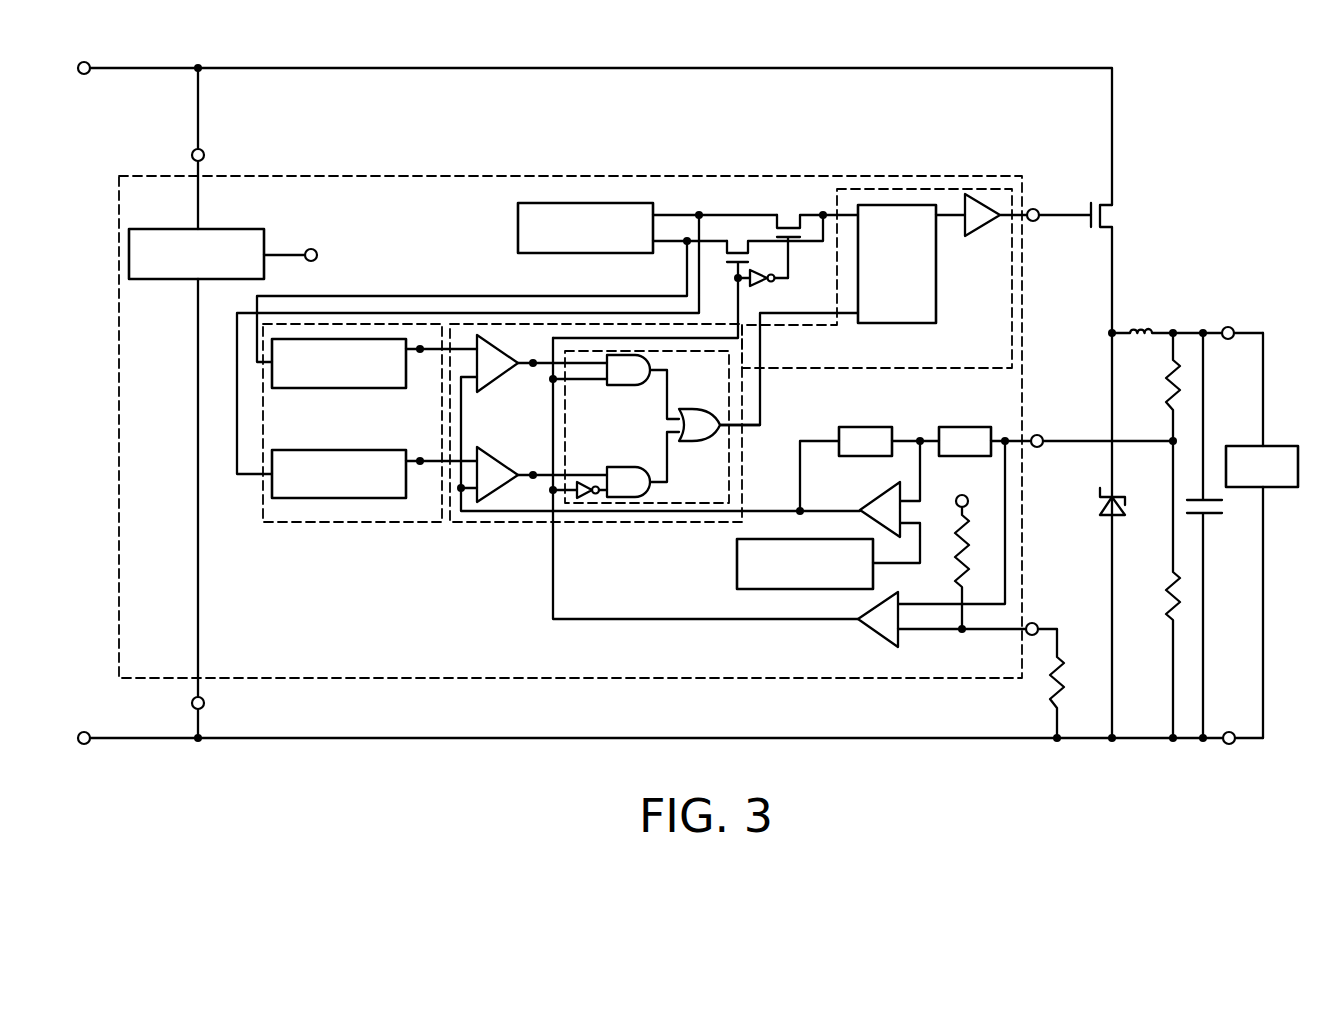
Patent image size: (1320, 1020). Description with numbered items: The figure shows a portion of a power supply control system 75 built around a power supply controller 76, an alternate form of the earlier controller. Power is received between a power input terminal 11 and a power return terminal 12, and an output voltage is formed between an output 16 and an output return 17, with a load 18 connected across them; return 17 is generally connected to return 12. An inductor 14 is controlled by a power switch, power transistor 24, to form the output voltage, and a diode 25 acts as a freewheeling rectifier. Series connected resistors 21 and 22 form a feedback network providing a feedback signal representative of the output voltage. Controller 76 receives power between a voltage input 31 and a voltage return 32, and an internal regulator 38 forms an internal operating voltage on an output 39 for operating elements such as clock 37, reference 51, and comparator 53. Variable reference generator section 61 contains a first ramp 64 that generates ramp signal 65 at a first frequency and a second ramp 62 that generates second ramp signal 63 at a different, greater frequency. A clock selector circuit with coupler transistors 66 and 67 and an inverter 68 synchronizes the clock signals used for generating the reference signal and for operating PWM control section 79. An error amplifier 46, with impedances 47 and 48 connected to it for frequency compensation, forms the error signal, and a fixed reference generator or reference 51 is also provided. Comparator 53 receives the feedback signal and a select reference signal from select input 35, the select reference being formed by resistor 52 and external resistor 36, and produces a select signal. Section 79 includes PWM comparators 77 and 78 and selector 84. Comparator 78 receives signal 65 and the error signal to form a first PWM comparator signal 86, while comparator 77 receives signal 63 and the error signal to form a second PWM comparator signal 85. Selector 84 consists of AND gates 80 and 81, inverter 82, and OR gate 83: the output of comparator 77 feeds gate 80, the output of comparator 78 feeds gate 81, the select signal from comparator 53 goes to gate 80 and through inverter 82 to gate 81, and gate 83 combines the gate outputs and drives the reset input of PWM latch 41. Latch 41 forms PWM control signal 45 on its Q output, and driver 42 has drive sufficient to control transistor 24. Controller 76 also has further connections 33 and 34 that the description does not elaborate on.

The power input terminal 11 is at (88, 74).
The power return terminal 12 is at (88, 732).
The inductor 14 is at (1140, 330).
The output 16 is at (1230, 327).
The output return 17 is at (1235, 745).
The load 18 is at (1272, 490).
The resistor 21 is at (1168, 398).
The resistor 22 is at (1168, 612).
The power transistor 24 is at (1105, 222).
The diode 25 is at (1106, 520).
The voltage input 31 is at (204, 152).
The voltage return 32 is at (205, 700).
The controller output terminal 33 is at (1035, 208).
The feedback input terminal 34 is at (1040, 430).
The select input 35 is at (1038, 624).
The external resistor 36 is at (1062, 690).
The clock 37 is at (548, 253).
The internal regulator 38 is at (235, 229).
The output 39 is at (316, 250).
The PWM latch 41 is at (890, 323).
The driver 42 is at (978, 230).
The PWM control signal 45 is at (948, 220).
The error amplifier 46 is at (870, 497).
The impedance 47 is at (950, 427).
The impedance 48 is at (850, 427).
The fixed reference generator 51 is at (770, 589).
The resistor 52 is at (970, 540).
The comparator 53 is at (870, 630).
The variable reference generator section 61 is at (325, 522).
The second ramp generator 62 is at (290, 378).
The second ramp signal 63 is at (421, 355).
The first ramp generator 64 is at (370, 450).
The ramp signal 65 is at (421, 456).
The coupler transistor 66 is at (790, 228).
The coupler transistor 67 is at (738, 250).
The inverter 68 is at (735, 278).
The power supply control system 75 is at (919, 796).
The power supply controller 76 is at (487, 176).
The PWM comparator 77 is at (495, 345).
The PWM comparator 78 is at (497, 487).
The PWM control section 79 is at (490, 522).
The AND gate 80 is at (618, 375).
The AND gate 81 is at (635, 478).
The inverter 82 is at (592, 500).
The OR gate 83 is at (703, 420).
The selector logic 84 is at (730, 460).
The second PWM comparator signal 85 is at (530, 368).
The first PWM comparator signal 86 is at (530, 470).